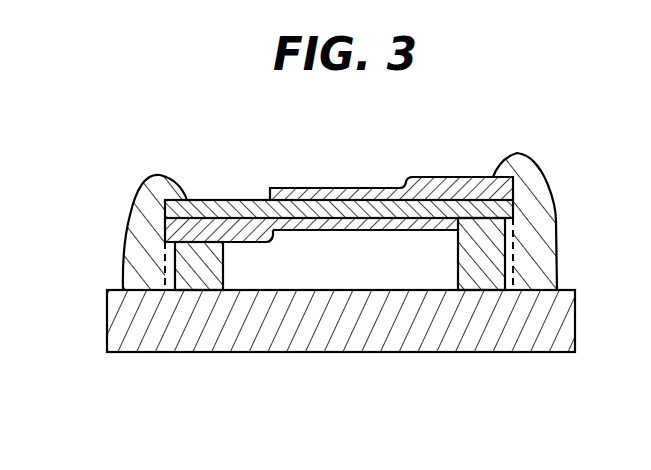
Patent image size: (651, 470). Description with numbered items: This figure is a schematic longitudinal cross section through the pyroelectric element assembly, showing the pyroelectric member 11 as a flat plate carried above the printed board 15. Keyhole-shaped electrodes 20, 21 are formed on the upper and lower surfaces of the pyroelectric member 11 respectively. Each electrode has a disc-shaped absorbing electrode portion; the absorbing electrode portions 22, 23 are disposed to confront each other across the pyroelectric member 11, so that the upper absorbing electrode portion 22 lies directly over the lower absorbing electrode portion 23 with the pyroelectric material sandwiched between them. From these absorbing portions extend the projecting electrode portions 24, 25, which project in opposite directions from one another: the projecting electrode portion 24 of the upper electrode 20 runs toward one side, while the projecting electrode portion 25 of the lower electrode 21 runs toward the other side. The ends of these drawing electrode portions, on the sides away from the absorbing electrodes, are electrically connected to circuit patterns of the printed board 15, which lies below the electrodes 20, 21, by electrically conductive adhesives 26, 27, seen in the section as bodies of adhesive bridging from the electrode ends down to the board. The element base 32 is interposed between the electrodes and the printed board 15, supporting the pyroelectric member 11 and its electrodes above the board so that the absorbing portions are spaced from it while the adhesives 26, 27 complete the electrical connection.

The pyroelectric member 11 is at (239, 210).
The printed board 15 is at (545, 323).
The keyhole-shaped electrode 20 is at (417, 177).
The keyhole-shaped electrode 21 is at (295, 230).
The absorbing electrode portion 22 is at (325, 190).
The absorbing electrode portion 23 is at (350, 230).
The projecting electrode portion 24 is at (480, 183).
The projecting electrode portion 25 is at (237, 230).
The electrically conductive adhesive 26 is at (530, 231).
The electrically conductive adhesive 27 is at (140, 266).
The element base 32 is at (485, 283).